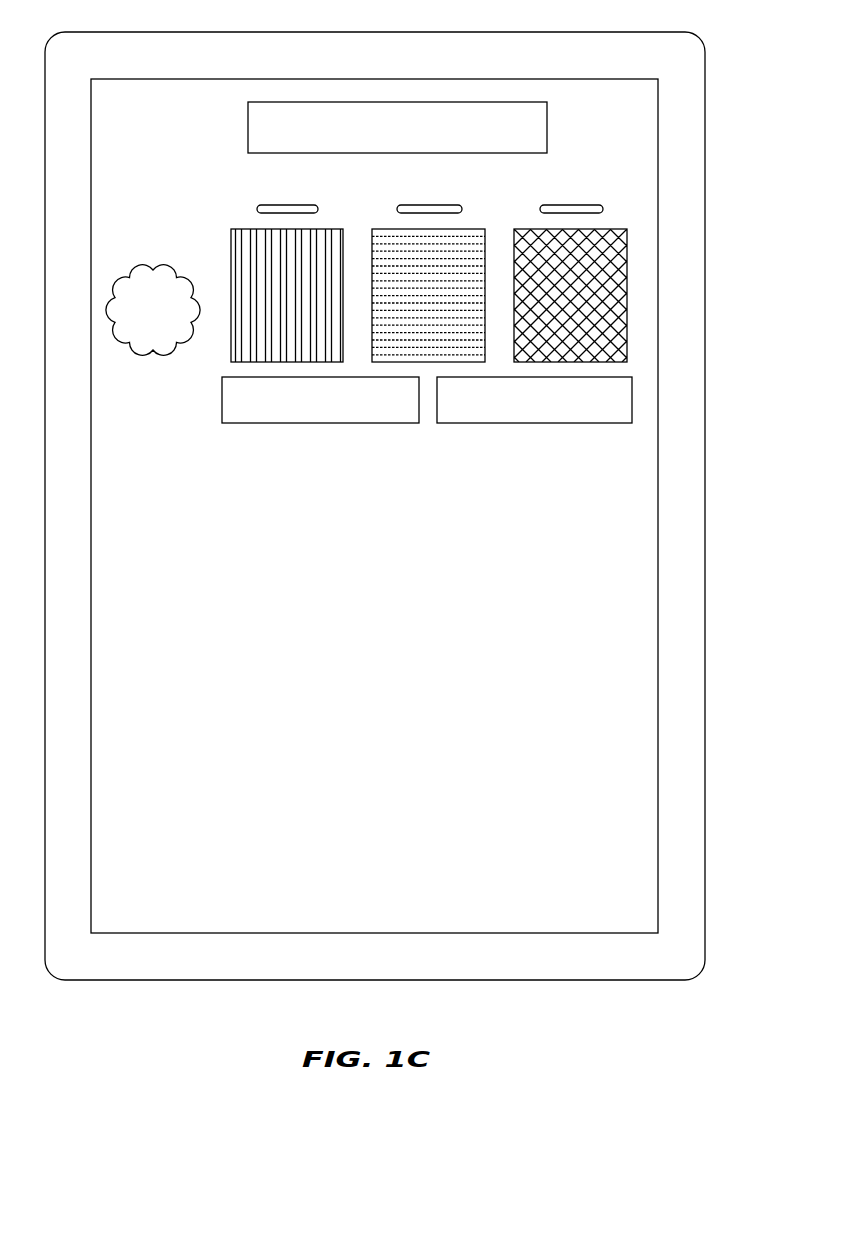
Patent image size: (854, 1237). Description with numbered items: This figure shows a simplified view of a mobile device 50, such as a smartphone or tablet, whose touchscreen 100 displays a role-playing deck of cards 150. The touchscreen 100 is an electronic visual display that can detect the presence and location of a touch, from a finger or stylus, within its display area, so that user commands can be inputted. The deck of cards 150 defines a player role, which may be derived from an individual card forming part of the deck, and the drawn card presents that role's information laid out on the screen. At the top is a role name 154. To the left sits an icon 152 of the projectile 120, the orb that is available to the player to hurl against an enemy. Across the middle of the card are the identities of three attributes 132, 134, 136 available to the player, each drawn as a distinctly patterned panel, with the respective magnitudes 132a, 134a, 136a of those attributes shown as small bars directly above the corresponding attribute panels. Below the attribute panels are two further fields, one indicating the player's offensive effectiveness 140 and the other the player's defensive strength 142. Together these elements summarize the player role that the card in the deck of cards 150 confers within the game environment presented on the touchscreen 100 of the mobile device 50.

The mobile device 50 is at (362, 32).
The touchscreen 100 is at (543, 79).
The projectile 120 is at (175, 352).
The attribute 132 is at (245, 229).
The magnitude of attribute 132a is at (313, 205).
The attribute 134 is at (386, 229).
The magnitude of attribute 134a is at (455, 205).
The attribute 136 is at (532, 229).
The magnitude of attribute 136a is at (578, 205).
The offensive effectiveness 140 is at (313, 423).
The defensive strength 142 is at (560, 423).
The role-playing deck of cards 150 is at (684, 250).
The icon of the projectile 152 is at (163, 246).
The role name 154 is at (248, 128).